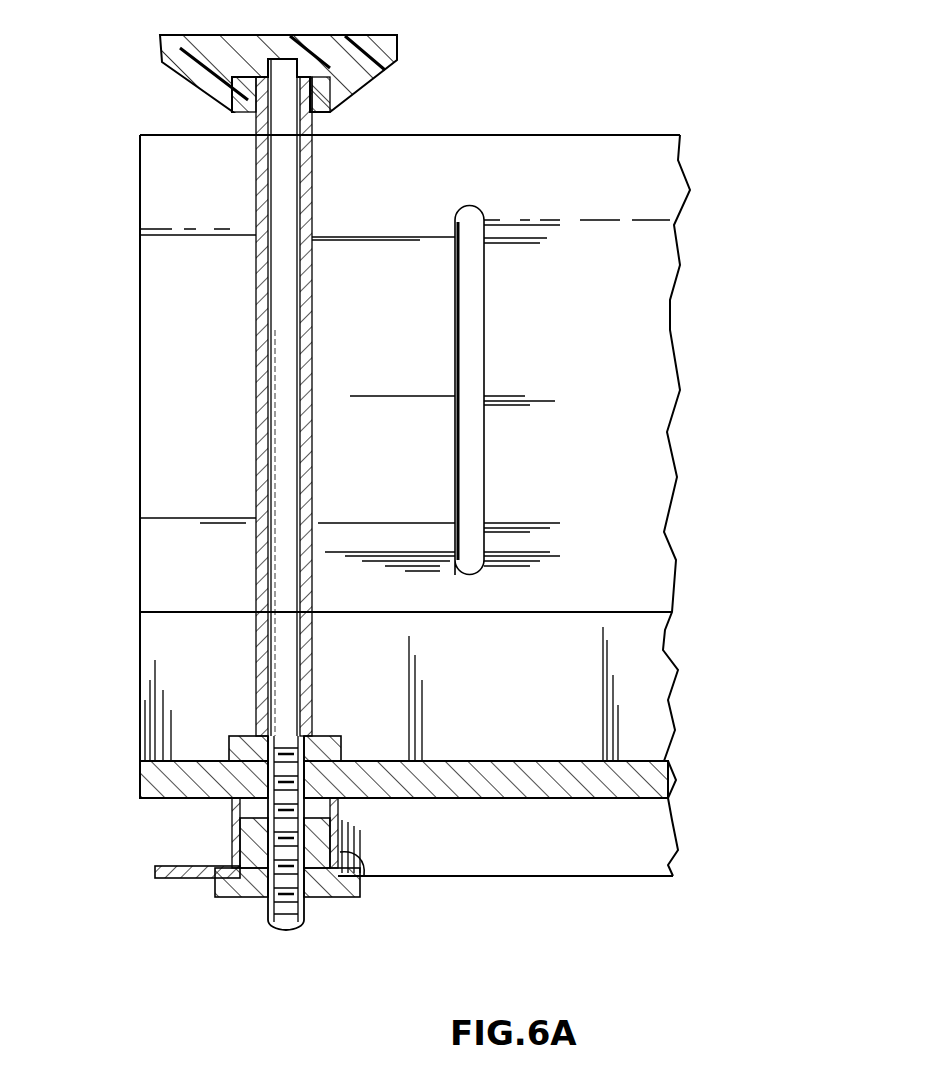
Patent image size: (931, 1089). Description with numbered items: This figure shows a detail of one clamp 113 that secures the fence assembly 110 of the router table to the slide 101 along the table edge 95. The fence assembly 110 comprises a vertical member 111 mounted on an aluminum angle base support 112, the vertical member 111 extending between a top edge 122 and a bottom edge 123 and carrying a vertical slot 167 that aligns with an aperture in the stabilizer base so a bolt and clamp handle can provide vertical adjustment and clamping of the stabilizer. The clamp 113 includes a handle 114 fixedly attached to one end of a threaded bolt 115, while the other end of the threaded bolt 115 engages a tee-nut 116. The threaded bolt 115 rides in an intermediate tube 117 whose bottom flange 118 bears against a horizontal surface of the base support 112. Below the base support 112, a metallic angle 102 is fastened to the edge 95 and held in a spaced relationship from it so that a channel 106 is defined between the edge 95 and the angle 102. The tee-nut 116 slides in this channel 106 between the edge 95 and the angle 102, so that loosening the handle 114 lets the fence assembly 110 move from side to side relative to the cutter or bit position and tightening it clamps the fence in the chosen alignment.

The handle 114 is at (310, 36).
The top edge 122 is at (567, 137).
The fence assembly 110 is at (704, 311).
The vertical member 111 is at (664, 398).
The vertical slot 167 is at (478, 318).
The clamp 113 is at (248, 344).
The threaded bolt 115 is at (279, 300).
The intermediate tube 117 is at (258, 413).
The base support 112 is at (650, 694).
The bottom edge 123 is at (642, 798).
The bottom flange 118 is at (248, 732).
The slide 101 is at (180, 833).
The angle 102 is at (156, 873).
The tee-nut 116 is at (232, 896).
The channel 106 is at (350, 833).
The edge 95 is at (346, 852).